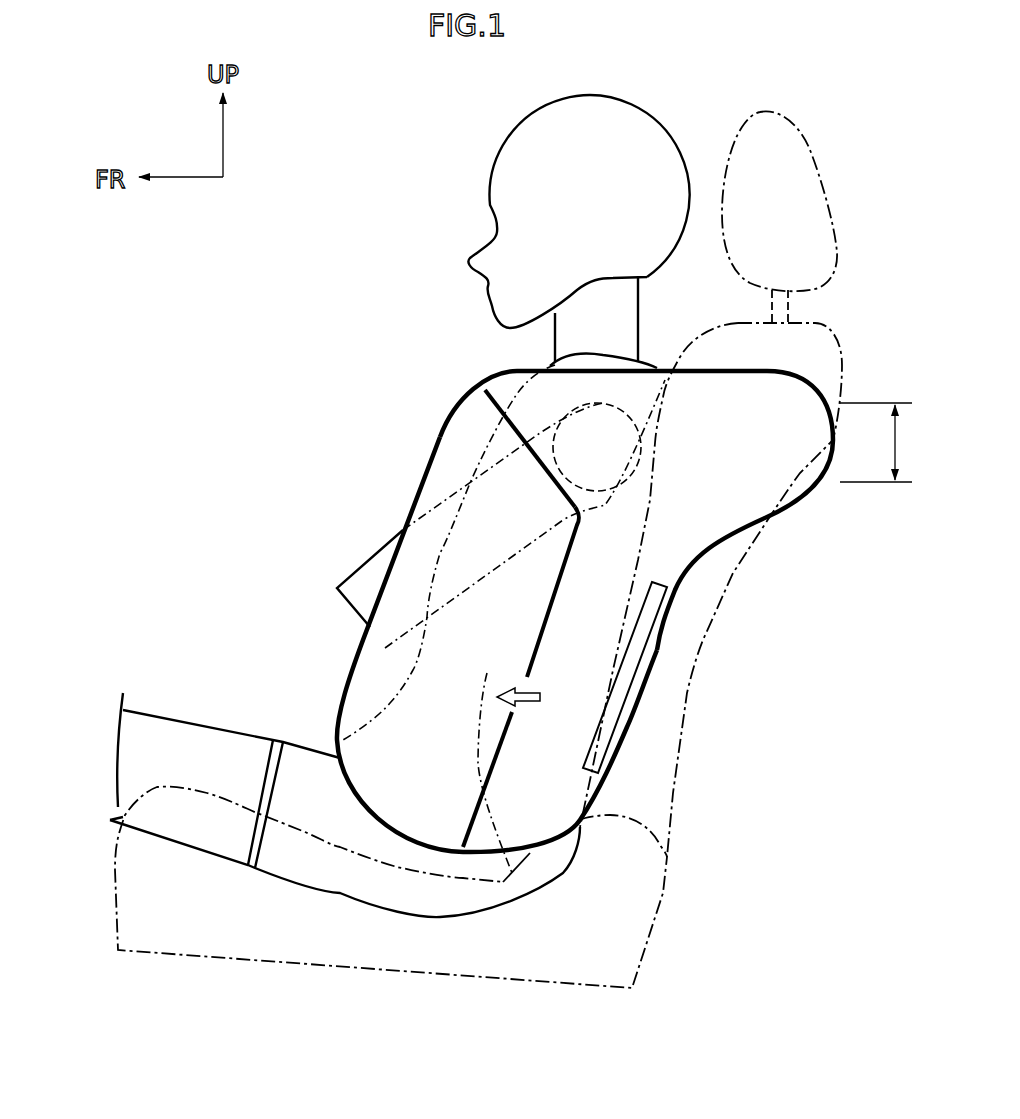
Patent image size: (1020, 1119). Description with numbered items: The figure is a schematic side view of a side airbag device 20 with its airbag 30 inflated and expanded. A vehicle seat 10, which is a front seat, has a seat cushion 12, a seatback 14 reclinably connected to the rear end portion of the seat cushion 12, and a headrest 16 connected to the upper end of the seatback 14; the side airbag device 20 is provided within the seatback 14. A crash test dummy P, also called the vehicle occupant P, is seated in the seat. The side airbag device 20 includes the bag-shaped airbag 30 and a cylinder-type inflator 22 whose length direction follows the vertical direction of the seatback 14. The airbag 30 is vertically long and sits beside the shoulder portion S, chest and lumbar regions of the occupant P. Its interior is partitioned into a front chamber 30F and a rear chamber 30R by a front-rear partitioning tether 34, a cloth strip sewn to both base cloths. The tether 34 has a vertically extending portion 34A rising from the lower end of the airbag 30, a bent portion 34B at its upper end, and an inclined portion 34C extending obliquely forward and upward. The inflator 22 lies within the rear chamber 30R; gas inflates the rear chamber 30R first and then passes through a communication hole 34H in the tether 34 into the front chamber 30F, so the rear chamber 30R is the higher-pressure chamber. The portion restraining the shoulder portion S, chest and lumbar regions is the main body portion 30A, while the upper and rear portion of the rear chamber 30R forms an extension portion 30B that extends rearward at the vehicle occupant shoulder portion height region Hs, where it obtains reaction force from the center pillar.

The vehicle seat 10 is at (117, 925).
The seat cushion 12 is at (113, 877).
The seatback 14 is at (843, 362).
The headrest 16 is at (810, 142).
The side airbag device 20 is at (355, 477).
The inflator 22 is at (623, 683).
The airbag 30 is at (440, 437).
The main body portion 30A is at (375, 688).
The extension portion 30B is at (782, 487).
The front chamber 30F is at (488, 662).
The rear chamber 30R is at (600, 662).
The front-rear partitioning tether 34 is at (497, 770).
The vertically extending portion 34A is at (507, 730).
The bent portion 34B is at (610, 517).
The inclined portion 34C is at (527, 460).
The communication hole 34H is at (523, 678).
The crash test dummy P is at (498, 143).
The shoulder portion S is at (603, 405).
The vehicle occupant shoulder portion height region Hs is at (876, 442).